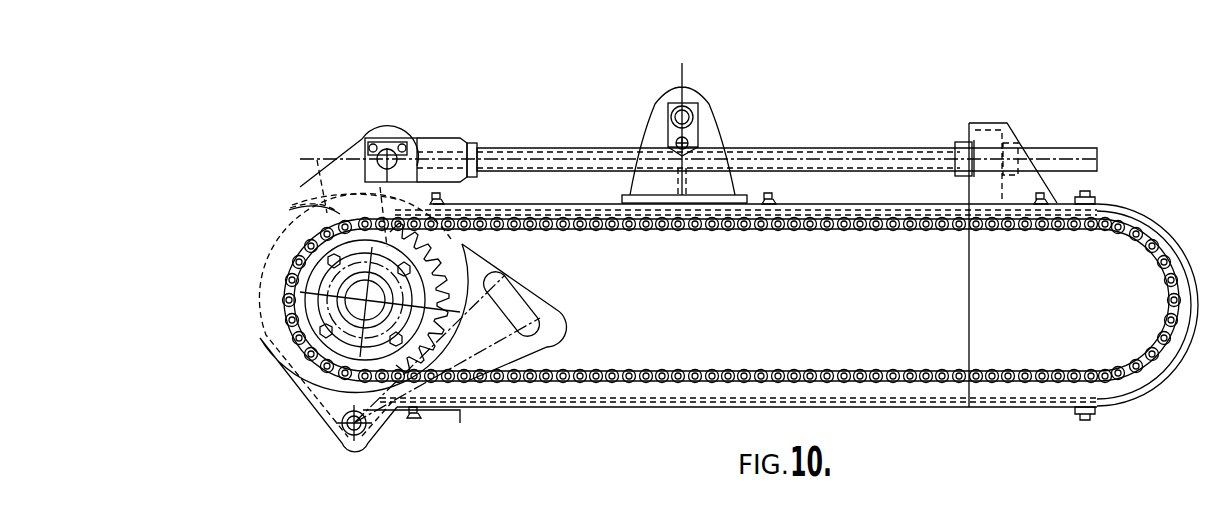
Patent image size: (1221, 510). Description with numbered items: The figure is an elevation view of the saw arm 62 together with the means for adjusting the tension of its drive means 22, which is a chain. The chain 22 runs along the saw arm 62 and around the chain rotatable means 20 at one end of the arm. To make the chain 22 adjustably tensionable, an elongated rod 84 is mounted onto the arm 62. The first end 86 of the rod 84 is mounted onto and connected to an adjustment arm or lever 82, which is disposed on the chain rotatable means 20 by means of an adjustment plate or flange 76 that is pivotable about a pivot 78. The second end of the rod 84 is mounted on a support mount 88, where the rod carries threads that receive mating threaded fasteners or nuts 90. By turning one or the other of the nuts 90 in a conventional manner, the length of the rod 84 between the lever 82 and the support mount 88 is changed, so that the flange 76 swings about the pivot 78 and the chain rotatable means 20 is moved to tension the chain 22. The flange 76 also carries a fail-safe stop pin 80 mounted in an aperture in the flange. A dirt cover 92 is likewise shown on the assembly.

The chain rotatable means 20 is at (283, 307).
The drive means 22 is at (688, 233).
The saw arm 62 is at (598, 409).
The adjustment plate or flange 76 is at (282, 378).
The pivot 78 is at (366, 431).
The fail-safe stop pin 80 is at (497, 281).
The adjustment arm or lever 82 is at (352, 140).
The rod 84 is at (619, 148).
The first end 86 is at (442, 137).
The support mount 88 is at (990, 138).
The nuts 90 is at (1015, 138).
The dirt cover 92 is at (290, 212).